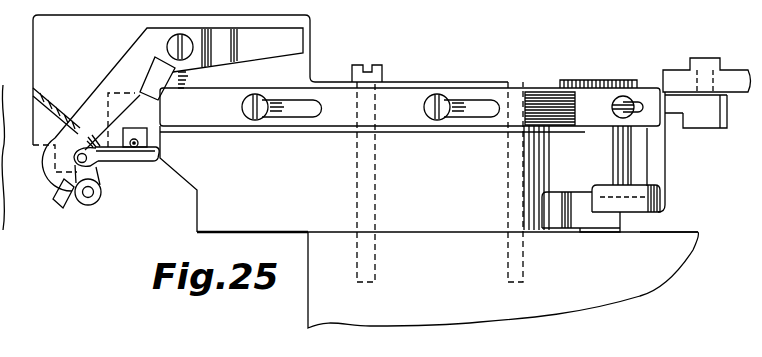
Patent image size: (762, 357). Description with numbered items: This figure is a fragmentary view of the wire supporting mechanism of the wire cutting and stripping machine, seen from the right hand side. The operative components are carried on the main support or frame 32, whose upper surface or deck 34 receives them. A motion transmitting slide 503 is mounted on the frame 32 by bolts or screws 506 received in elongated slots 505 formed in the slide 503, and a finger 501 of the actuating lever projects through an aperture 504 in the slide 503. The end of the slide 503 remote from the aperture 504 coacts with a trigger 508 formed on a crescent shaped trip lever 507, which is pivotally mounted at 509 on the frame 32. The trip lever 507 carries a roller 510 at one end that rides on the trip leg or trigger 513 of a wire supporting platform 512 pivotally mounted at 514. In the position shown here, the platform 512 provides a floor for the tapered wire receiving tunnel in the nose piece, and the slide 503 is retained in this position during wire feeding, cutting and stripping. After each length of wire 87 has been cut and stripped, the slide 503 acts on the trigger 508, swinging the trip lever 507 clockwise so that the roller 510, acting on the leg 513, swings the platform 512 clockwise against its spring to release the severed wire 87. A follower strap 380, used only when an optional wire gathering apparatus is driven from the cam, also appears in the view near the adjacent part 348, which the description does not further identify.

The main support or frame 32 is at (593, 286).
The upper surface or deck 34 is at (660, 231).
The wire 87 is at (138, 143).
The bracket 348 is at (688, 108).
The follower strap 380 is at (735, 79).
The finger 501 is at (645, 108).
The motion transmitting slide 503 is at (410, 97).
The aperture 504 is at (630, 97).
The elongated slots 505 is at (312, 118).
The bolts or screws 506 is at (263, 120).
The trip lever 507 is at (122, 63).
The trigger 508 is at (176, 77).
The pivot 509 is at (182, 42).
The roller 510 is at (94, 205).
The wire supporting platform 512 is at (148, 162).
The trip leg or trigger 513 is at (60, 209).
The pivot 514 is at (60, 171).